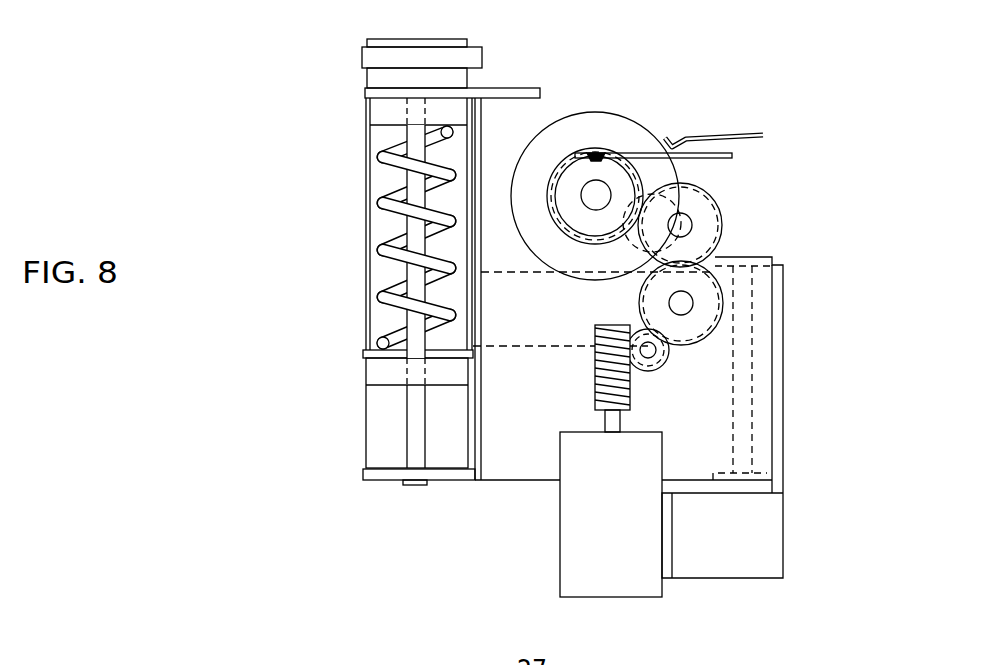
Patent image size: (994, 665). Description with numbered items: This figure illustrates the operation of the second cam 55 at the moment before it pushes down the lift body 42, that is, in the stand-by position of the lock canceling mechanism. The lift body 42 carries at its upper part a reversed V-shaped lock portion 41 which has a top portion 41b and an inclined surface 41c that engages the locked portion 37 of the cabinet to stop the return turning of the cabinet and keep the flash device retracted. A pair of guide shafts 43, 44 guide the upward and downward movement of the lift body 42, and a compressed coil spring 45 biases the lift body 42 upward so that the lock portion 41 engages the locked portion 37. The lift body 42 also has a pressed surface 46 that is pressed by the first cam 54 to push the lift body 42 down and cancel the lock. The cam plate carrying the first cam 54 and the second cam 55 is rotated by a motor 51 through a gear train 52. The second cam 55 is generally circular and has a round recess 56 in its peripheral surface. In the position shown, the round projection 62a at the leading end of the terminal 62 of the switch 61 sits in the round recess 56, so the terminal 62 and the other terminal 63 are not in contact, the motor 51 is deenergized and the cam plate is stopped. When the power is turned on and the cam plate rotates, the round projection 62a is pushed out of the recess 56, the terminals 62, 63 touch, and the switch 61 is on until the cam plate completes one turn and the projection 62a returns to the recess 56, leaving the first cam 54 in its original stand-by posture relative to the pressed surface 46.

The locked portion 37 is at (433, 52).
The reversed V-shaped lock portion 41 is at (240, 6).
The top portion 41b is at (383, 38).
The other inclined surface 41c is at (366, 80).
The lift body 42 is at (360, 153).
The guide shaft 43 is at (412, 427).
The guide shaft 44 is at (747, 400).
The compressed coil spring 45 is at (380, 251).
The pressed surface 46 is at (533, 269).
The motor 51 is at (582, 535).
The gear train 52 is at (676, 356).
The first cam 54 is at (686, 183).
The second cam 55 is at (565, 183).
The round recess 56 is at (560, 160).
The switch 61 is at (755, 43).
The terminal 62 is at (653, 153).
The round projection 62a is at (598, 153).
The other terminal 63 is at (728, 135).